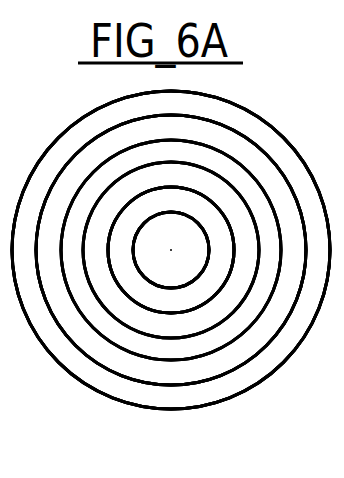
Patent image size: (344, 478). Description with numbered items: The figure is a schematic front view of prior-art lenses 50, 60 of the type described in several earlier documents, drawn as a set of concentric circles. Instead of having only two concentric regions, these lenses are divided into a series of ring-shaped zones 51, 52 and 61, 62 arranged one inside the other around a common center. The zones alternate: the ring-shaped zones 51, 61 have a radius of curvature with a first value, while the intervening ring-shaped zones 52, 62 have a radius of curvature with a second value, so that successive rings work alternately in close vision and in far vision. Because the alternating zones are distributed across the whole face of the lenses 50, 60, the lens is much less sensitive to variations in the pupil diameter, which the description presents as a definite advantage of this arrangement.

The lens 50 is at (262, 388).
The lens 60 is at (262, 388).
The ring-shaped zone 51 is at (127, 273).
The ring-shaped zone 61 is at (127, 273).
The ring-shaped zone 52 is at (150, 320).
The ring-shaped zone 62 is at (150, 320).